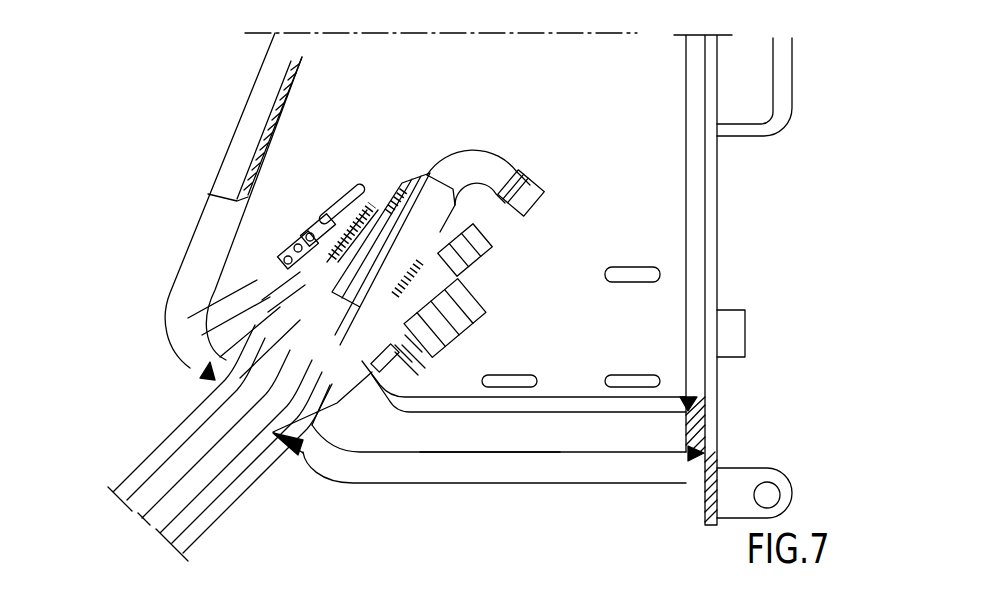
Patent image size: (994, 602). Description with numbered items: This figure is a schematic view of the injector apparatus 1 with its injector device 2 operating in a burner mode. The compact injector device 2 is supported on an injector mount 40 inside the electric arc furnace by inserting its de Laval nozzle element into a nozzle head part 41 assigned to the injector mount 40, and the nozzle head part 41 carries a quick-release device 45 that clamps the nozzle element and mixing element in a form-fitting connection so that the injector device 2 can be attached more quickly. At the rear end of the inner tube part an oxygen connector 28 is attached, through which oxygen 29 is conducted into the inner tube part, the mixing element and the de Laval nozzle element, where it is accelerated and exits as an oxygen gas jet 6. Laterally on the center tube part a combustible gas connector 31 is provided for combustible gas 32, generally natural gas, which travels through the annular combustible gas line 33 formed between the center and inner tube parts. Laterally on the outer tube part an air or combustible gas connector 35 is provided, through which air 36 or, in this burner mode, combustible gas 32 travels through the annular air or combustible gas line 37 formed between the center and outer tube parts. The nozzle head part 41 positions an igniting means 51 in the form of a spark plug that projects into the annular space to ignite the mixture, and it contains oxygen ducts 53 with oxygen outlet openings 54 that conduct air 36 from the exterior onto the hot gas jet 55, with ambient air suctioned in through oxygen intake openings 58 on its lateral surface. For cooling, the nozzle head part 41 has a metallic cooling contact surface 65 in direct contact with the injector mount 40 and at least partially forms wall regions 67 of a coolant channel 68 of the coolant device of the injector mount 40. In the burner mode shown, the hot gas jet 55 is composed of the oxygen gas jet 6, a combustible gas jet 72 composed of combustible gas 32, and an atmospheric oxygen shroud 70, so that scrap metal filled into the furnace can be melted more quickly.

The injector apparatus 1 is at (605, 88).
The injector device 2 is at (451, 112).
The oxygen gas jet 6 is at (172, 503).
The oxygen connector 28 is at (478, 160).
The oxygen 29 is at (543, 214).
The combustible gas connector 31 is at (487, 253).
The combustible gas 32 is at (472, 336).
The annular combustible gas line 33 is at (400, 183).
The air or combustible gas connector 35 is at (476, 300).
The air 36 is at (275, 268).
The annular air or combustible gas line 37 is at (360, 190).
The injector mount 40 is at (590, 468).
The nozzle head part 41 is at (227, 368).
The quick-release device 45 is at (322, 220).
The igniting means 51 is at (410, 372).
The oxygen ducts 53 is at (253, 342).
The oxygen outlet openings 54 is at (237, 382).
The hot gas jet 55 is at (243, 490).
The oxygen intake openings 58 is at (276, 298).
The metallic cooling contact surface 65 is at (338, 410).
The wall regions 67 is at (225, 305).
The coolant channel 68 is at (500, 435).
The atmospheric oxygen shroud 70 is at (167, 457).
The combustible gas jet 72 is at (200, 495).